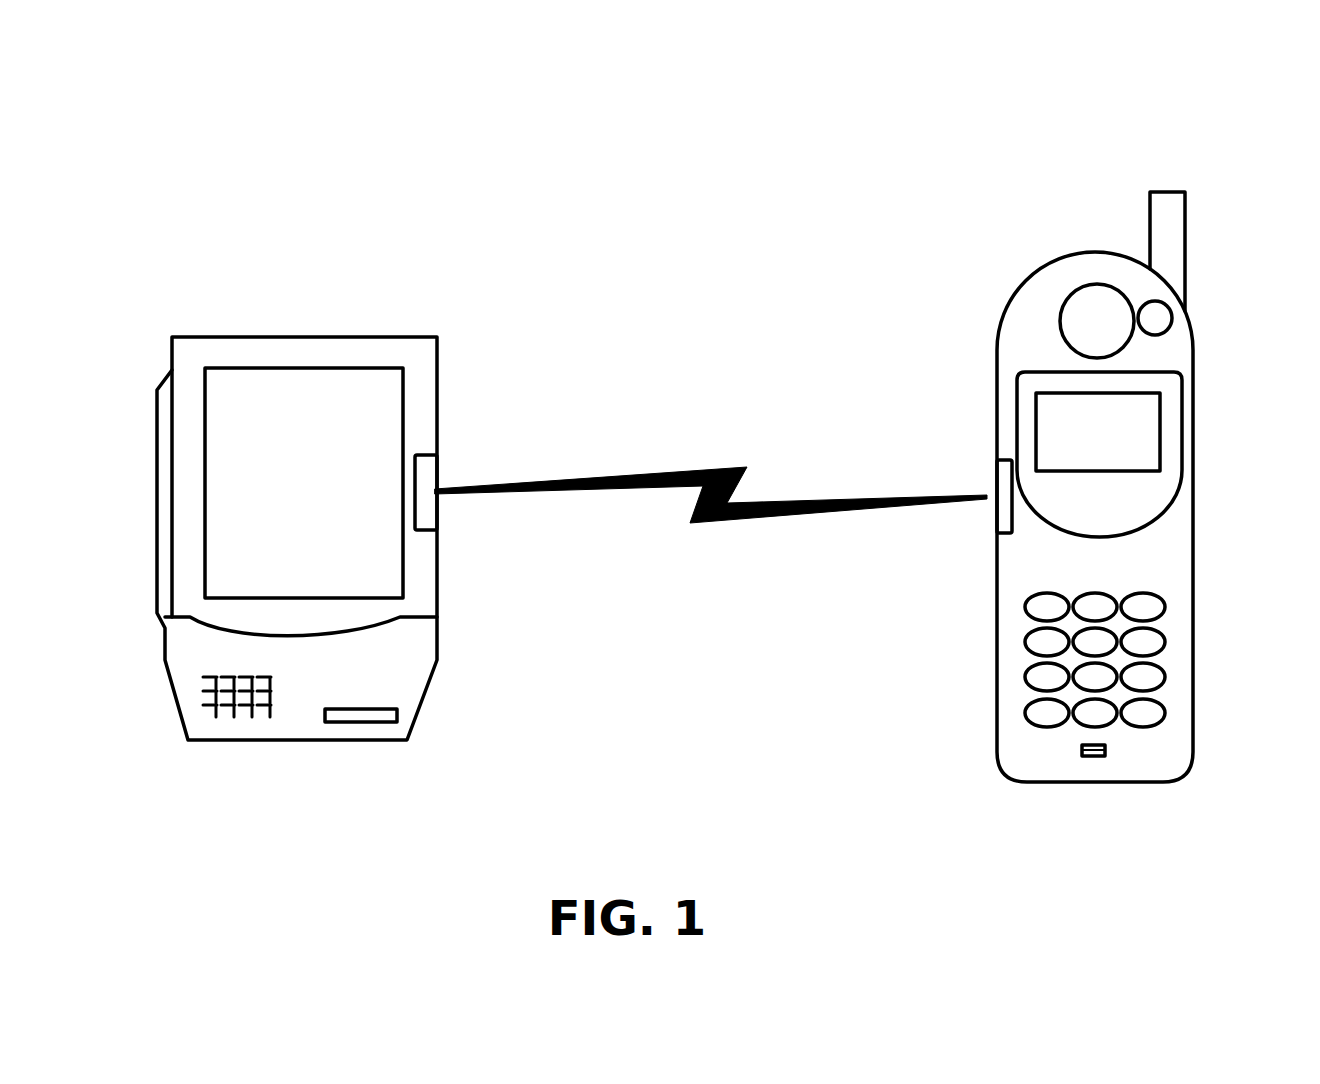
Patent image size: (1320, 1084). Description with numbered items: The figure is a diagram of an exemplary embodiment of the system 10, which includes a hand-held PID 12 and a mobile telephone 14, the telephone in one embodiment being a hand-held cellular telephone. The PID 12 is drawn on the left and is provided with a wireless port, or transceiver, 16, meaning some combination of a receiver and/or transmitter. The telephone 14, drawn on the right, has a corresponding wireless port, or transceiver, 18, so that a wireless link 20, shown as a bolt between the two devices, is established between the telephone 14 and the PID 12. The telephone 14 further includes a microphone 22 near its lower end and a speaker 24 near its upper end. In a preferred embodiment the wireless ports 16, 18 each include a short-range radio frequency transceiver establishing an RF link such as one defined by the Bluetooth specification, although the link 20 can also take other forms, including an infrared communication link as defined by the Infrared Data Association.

The system 10 is at (756, 193).
The hand-held PID 12 is at (297, 337).
The mobile telephone 14 is at (1195, 350).
The wireless port 16 is at (425, 465).
The wireless port 18 is at (993, 462).
The wireless link 20 is at (708, 470).
The microphone 22 is at (1107, 750).
The speaker 24 is at (1093, 290).